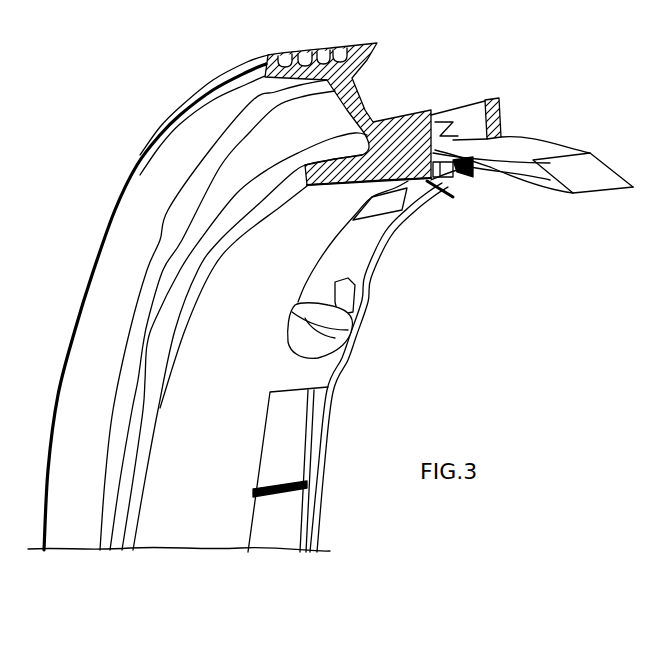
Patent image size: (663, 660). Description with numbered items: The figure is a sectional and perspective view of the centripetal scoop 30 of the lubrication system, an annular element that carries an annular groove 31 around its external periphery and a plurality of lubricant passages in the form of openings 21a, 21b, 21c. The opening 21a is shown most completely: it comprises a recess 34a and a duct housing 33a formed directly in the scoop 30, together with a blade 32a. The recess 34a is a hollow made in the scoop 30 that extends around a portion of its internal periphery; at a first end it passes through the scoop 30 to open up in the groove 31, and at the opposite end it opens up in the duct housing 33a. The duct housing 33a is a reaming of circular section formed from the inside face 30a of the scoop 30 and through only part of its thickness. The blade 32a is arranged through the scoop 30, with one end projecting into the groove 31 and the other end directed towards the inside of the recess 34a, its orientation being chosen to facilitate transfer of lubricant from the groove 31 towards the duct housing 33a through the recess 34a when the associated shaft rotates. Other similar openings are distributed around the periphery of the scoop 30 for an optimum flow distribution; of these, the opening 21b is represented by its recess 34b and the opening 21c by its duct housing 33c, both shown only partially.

The opening 21a is at (402, 267).
The opening 21b is at (341, 481).
The opening 21c is at (545, 202).
The centripetal scoop 30 is at (410, 117).
The inside face 30a is at (207, 513).
The annular groove 31 is at (500, 102).
The blade 32a is at (440, 120).
The duct housing 33a is at (324, 318).
The duct housing 33c is at (464, 178).
The recess 34a is at (358, 244).
The recess 34b is at (296, 508).